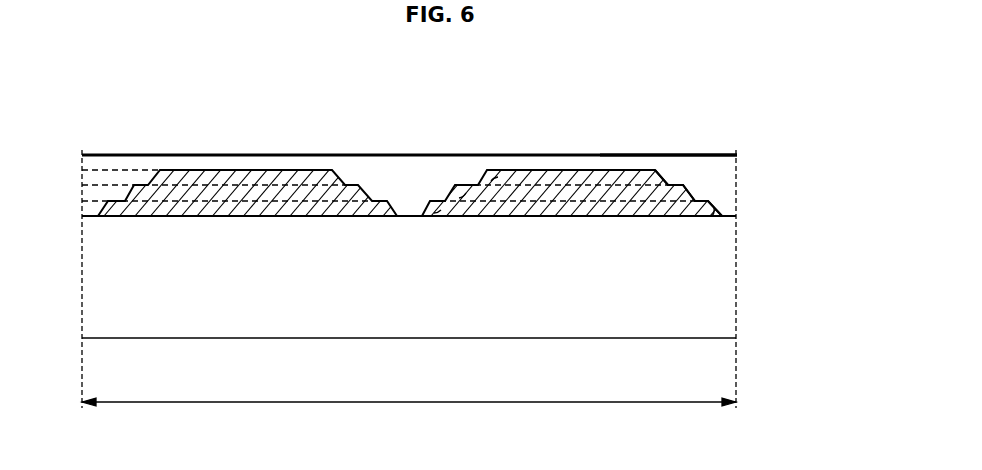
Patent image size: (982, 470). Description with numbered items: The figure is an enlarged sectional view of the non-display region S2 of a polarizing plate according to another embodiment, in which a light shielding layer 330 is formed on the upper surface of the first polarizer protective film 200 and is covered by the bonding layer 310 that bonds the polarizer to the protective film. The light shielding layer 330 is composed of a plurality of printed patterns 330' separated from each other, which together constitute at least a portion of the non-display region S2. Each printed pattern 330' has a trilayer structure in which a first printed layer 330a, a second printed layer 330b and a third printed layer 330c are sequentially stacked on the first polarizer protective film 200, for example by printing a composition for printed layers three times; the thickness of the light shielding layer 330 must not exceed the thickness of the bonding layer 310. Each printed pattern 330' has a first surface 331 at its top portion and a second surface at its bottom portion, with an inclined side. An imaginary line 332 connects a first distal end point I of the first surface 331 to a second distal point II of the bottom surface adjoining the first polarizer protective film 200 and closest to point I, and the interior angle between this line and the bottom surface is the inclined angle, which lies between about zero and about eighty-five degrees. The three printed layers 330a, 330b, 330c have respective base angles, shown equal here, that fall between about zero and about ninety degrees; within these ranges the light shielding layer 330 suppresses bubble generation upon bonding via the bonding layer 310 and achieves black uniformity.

The light shielding layer 330 is at (390, 192).
The printed pattern 330' is at (326, 227).
The first printed layer 330a is at (627, 212).
The second printed layer 330b is at (603, 192).
The third printed layer 330c is at (550, 173).
The first surface 331 is at (513, 170).
The imaginary line 332 is at (680, 170).
The bonding layer 310 is at (722, 192).
The first polarizer protective film 200 is at (712, 288).
The first distal end point I is at (658, 170).
The second distal point II is at (724, 215).
The non-display region S2 is at (409, 416).